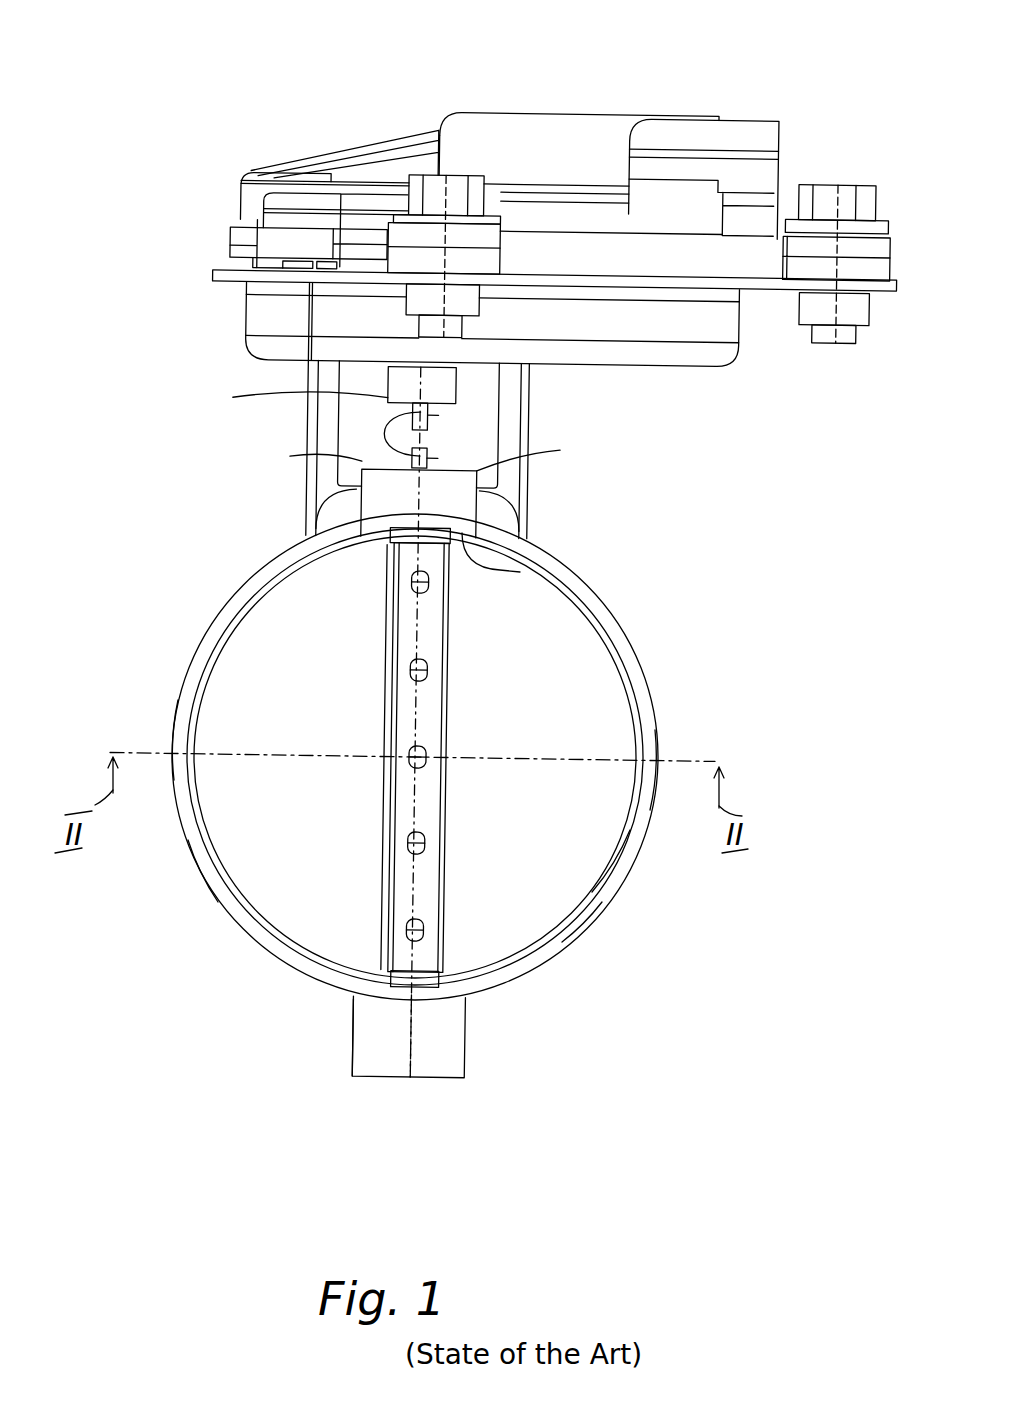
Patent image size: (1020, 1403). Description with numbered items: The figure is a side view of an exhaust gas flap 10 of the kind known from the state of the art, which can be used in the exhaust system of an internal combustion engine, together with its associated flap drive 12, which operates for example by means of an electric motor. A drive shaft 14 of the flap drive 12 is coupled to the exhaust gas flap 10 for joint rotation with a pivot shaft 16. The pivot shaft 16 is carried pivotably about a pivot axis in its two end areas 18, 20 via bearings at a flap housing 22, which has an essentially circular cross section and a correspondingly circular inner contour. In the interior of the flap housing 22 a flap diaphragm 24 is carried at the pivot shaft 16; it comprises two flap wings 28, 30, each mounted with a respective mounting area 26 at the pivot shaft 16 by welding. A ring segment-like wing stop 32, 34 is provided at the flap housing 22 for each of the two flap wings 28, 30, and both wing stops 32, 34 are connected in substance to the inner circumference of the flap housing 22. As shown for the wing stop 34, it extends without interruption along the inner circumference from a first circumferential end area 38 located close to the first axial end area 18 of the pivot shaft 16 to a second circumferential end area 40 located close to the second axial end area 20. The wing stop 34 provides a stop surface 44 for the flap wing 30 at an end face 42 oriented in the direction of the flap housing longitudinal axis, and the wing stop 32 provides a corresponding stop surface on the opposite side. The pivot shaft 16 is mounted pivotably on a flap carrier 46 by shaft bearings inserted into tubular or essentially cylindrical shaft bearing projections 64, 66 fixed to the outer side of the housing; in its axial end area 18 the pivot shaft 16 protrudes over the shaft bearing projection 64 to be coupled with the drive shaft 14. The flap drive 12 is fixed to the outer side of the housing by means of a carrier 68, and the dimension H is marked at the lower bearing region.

The exhaust gas flap 10 is at (777, 1062).
The flap drive 12 is at (503, 112).
The drive shaft 14 is at (410, 400).
The pivot shaft 16 is at (325, 522).
The first axial end area 18 is at (452, 500).
The second axial end area 20 is at (446, 1006).
The flap housing 22 is at (617, 618).
The flap diaphragm 24 is at (165, 870).
The mounting area 26 is at (400, 905).
The flap wing 28 is at (270, 855).
The flap wing 30 is at (584, 725).
The wing stop 32 is at (185, 740).
The wing stop 34 is at (613, 862).
The first circumferential end area 38 is at (520, 572).
The second circumferential end area 40 is at (460, 985).
The end face 42 is at (588, 905).
The stop surface 44 is at (637, 780).
The flap carrier 46 is at (703, 637).
The shaft bearing projection 64 is at (375, 470).
The shaft bearing projection 66 is at (375, 1055).
The carrier 68 is at (530, 490).
The height H is at (410, 1060).